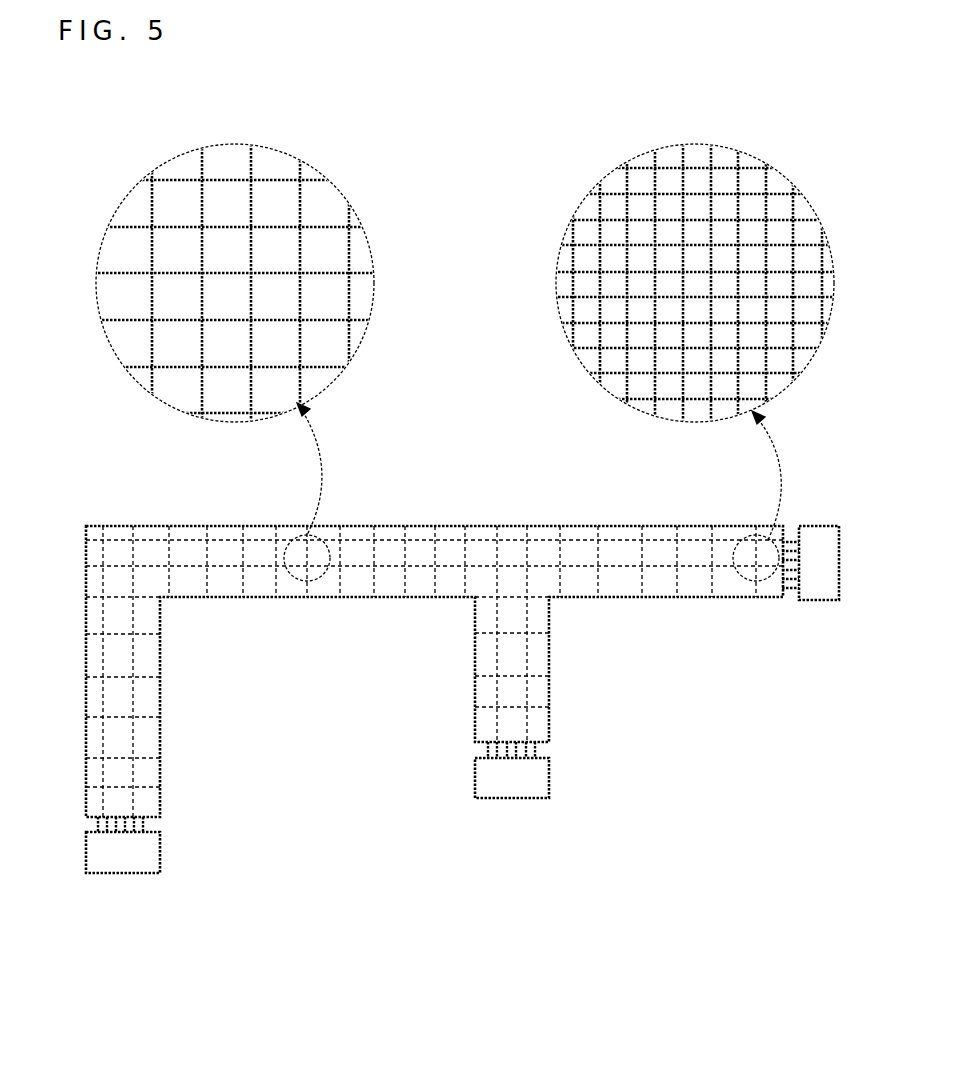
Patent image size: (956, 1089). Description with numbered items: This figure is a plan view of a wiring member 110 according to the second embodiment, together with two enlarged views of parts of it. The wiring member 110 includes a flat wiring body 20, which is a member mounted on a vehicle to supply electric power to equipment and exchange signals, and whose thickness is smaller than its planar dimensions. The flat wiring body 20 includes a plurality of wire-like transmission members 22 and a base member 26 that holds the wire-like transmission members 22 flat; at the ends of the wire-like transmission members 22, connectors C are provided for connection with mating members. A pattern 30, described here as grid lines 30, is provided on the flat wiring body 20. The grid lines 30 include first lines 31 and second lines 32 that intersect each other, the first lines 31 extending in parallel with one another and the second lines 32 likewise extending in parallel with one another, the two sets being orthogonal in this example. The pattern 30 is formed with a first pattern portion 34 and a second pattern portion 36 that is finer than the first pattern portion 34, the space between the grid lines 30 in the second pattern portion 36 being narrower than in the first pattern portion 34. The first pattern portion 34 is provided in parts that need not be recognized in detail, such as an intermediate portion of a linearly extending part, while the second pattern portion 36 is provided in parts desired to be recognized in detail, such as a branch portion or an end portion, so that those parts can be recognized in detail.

The wiring member 110 is at (101, 508).
The flat wiring body 20 is at (474, 688).
The wire-like transmission member 22 is at (789, 590).
The base member 26 is at (348, 600).
The pattern 30 is at (418, 479).
The first lines 31 is at (180, 223).
The second lines 32 is at (247, 170).
The first pattern portion 34 is at (340, 191).
The second pattern portion 36 is at (599, 189).
The connector C is at (820, 598).